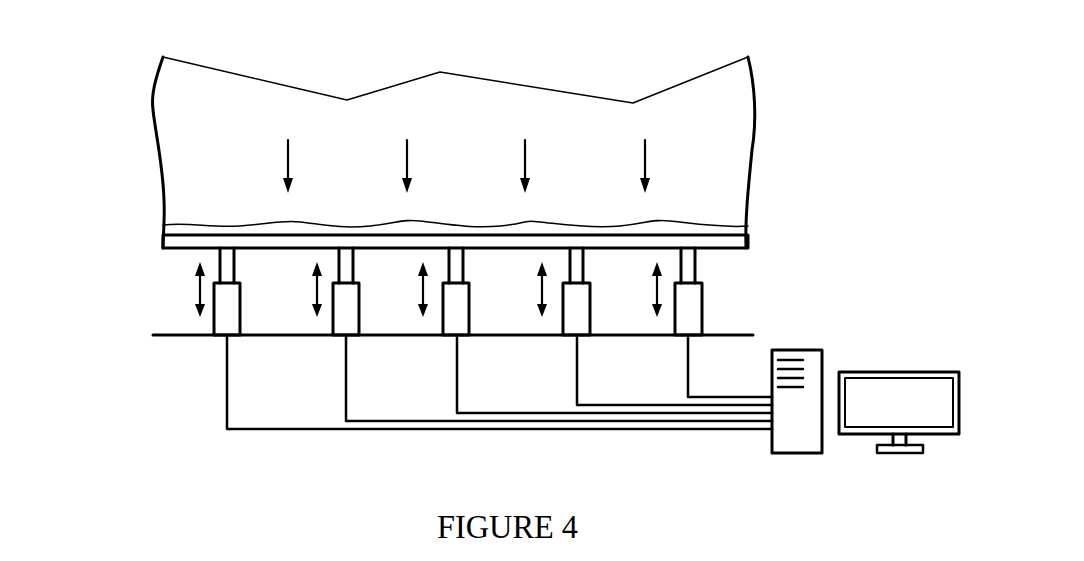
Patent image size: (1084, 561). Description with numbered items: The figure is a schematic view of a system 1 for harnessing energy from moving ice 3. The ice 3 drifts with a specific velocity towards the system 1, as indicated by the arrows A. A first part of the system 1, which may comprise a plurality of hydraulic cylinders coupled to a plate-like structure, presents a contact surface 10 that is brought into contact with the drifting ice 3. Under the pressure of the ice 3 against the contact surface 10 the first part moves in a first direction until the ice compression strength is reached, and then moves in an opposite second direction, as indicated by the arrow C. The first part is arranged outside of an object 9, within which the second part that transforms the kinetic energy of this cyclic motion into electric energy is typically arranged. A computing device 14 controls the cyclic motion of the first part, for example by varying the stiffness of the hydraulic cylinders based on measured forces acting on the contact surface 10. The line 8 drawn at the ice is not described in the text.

The system 1 is at (893, 137).
The ice 3 is at (737, 153).
The contact surface 8 is at (736, 228).
The contact surface 10 is at (222, 233).
The arrows A is at (283, 158).
The arrow C is at (197, 290).
The object 9 is at (183, 337).
The computing device 14 is at (813, 382).